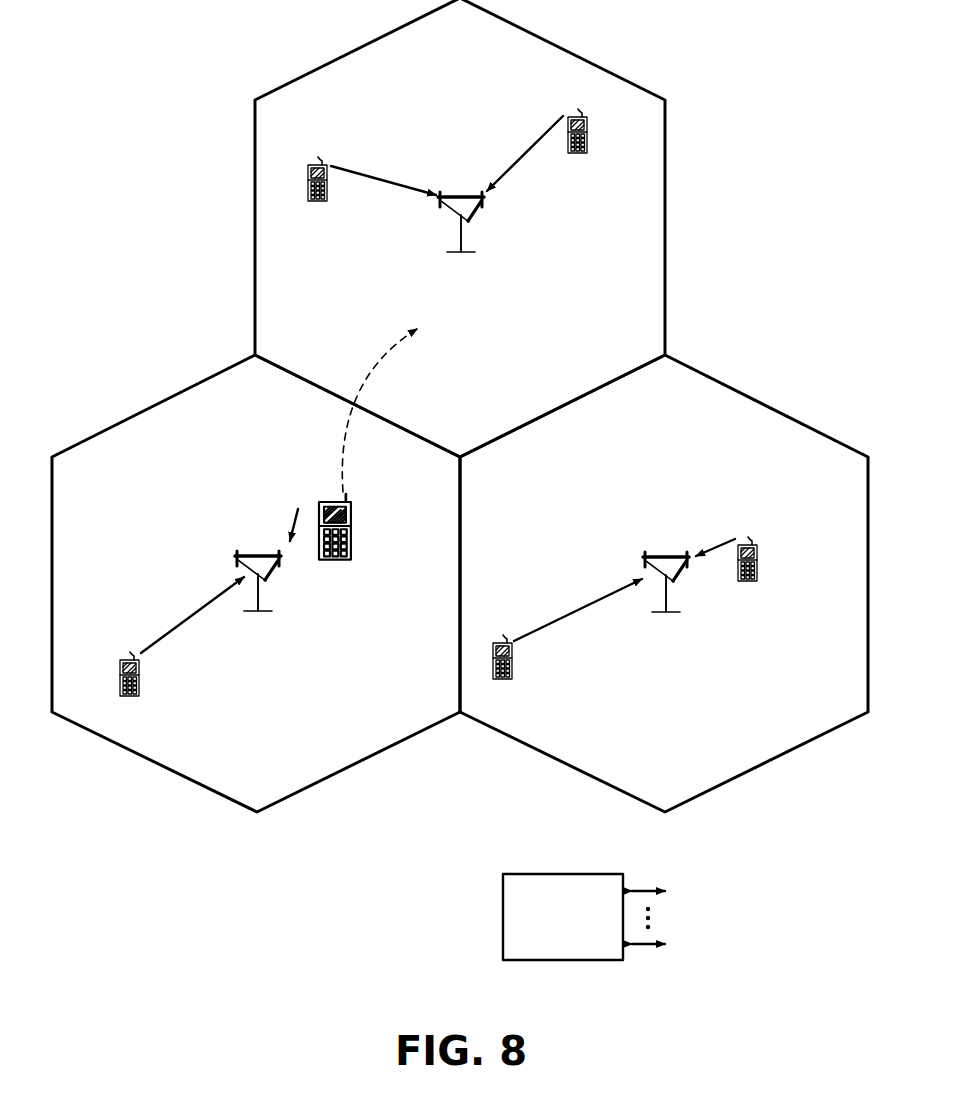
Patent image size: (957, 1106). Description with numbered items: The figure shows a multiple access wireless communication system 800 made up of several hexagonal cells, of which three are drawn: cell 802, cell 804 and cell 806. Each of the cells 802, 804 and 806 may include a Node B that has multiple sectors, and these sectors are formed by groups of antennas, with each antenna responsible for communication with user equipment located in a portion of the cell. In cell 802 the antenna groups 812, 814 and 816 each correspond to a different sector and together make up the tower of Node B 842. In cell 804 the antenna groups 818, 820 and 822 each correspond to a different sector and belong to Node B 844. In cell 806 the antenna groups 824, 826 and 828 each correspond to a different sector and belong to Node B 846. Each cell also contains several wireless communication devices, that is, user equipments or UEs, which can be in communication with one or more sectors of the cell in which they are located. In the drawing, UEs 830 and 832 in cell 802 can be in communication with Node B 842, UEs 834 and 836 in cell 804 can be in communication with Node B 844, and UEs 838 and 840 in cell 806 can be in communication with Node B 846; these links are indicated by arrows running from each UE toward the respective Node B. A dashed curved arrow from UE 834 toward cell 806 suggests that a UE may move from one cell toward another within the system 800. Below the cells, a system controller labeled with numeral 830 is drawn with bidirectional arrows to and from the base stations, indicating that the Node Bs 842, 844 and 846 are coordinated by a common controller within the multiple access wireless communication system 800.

The multiple access wireless communication system 800 is at (770, 62).
The cell 802 is at (664, 583).
The cell 804 is at (256, 583).
The cell 806 is at (460, 228).
The antenna group 812 is at (643, 553).
The antenna group 814 is at (676, 582).
The antenna group 816 is at (690, 564).
The antenna group 818 is at (270, 582).
The antenna group 820 is at (280, 565).
The antenna group 822 is at (238, 553).
The antenna group 824 is at (440, 210).
The antenna group 826 is at (474, 223).
The antenna group 828 is at (484, 205).
The UE 830 is at (558, 873).
The UE 832 is at (563, 629).
The UE 834 is at (328, 496).
The UE 836 is at (173, 636).
The UE 838 is at (364, 167).
The UE 840 is at (546, 137).
The Node B 842 is at (668, 553).
The Node B 844 is at (252, 553).
The Node B 846 is at (454, 194).